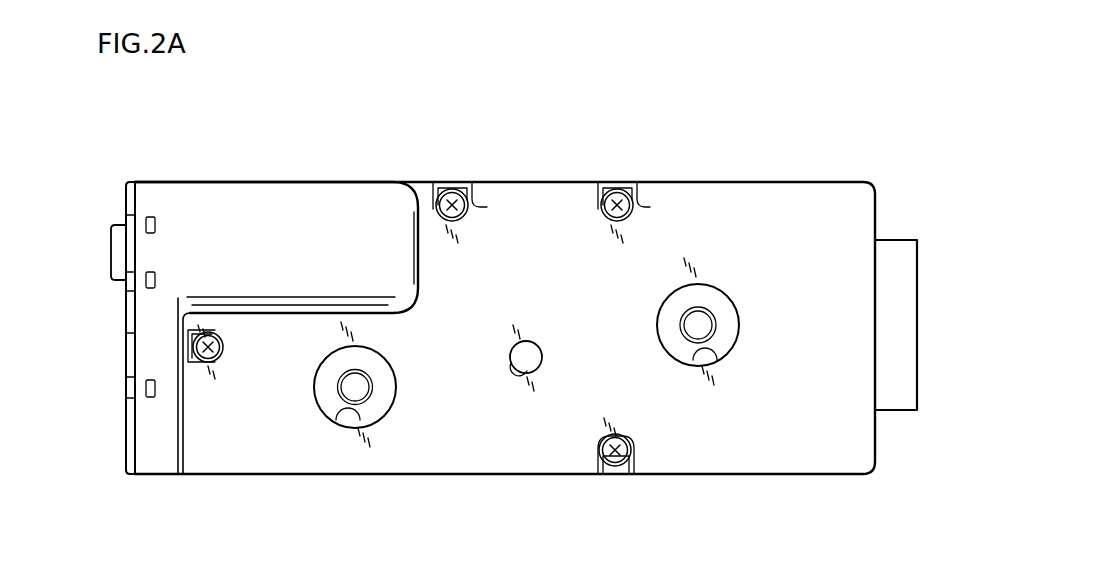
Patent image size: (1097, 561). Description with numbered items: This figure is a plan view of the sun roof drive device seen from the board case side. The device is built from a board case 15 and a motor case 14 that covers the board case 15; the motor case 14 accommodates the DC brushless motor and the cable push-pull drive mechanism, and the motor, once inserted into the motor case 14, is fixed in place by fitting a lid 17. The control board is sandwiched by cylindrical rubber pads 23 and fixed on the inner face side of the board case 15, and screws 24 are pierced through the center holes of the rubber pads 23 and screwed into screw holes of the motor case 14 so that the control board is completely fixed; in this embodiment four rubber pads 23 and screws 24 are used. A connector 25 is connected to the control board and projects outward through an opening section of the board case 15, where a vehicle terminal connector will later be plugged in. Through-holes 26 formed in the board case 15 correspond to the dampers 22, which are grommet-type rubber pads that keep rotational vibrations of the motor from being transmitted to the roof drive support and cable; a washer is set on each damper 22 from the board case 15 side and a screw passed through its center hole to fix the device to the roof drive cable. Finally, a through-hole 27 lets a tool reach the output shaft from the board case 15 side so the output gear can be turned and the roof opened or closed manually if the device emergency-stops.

The motor case 14 is at (282, 193).
The board case 15 is at (745, 207).
The lid 17 is at (127, 313).
The damper 22 is at (378, 400).
The rubber pad 23 is at (468, 205).
The screw 24 is at (435, 207).
The connector 25 is at (901, 250).
The through-hole 26 is at (357, 422).
The through-hole 27 is at (517, 364).